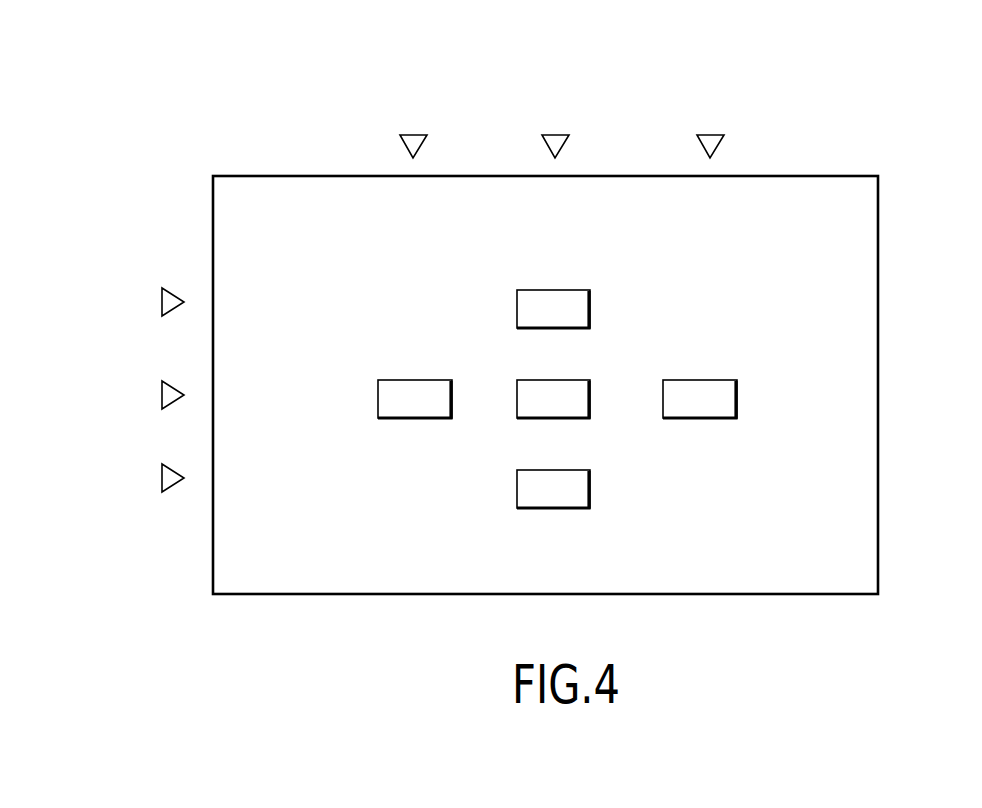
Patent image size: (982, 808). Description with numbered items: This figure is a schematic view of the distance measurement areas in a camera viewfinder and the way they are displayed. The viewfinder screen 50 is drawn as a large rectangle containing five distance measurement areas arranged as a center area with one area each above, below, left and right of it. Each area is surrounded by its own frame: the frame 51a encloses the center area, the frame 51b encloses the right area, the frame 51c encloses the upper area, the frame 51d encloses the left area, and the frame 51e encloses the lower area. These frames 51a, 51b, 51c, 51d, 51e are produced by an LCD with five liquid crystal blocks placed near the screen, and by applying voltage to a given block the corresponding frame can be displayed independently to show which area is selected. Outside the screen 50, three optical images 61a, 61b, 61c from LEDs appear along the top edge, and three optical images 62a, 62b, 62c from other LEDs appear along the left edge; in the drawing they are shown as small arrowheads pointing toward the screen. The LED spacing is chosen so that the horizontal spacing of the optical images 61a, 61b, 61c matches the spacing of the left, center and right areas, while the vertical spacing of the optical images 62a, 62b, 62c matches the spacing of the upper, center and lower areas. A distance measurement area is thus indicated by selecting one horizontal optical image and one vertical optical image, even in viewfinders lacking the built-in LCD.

The viewfinder screen 50 is at (858, 176).
The frame 51a is at (522, 380).
The frame 51b is at (708, 380).
The frame 51c is at (554, 290).
The frame 51d is at (413, 380).
The frame 51e is at (632, 497).
The optical image 61a is at (413, 135).
The optical image 61b is at (555, 135).
The optical image 61c is at (710, 135).
The optical image 62a is at (162, 302).
The optical image 62b is at (162, 395).
The optical image 62c is at (162, 478).